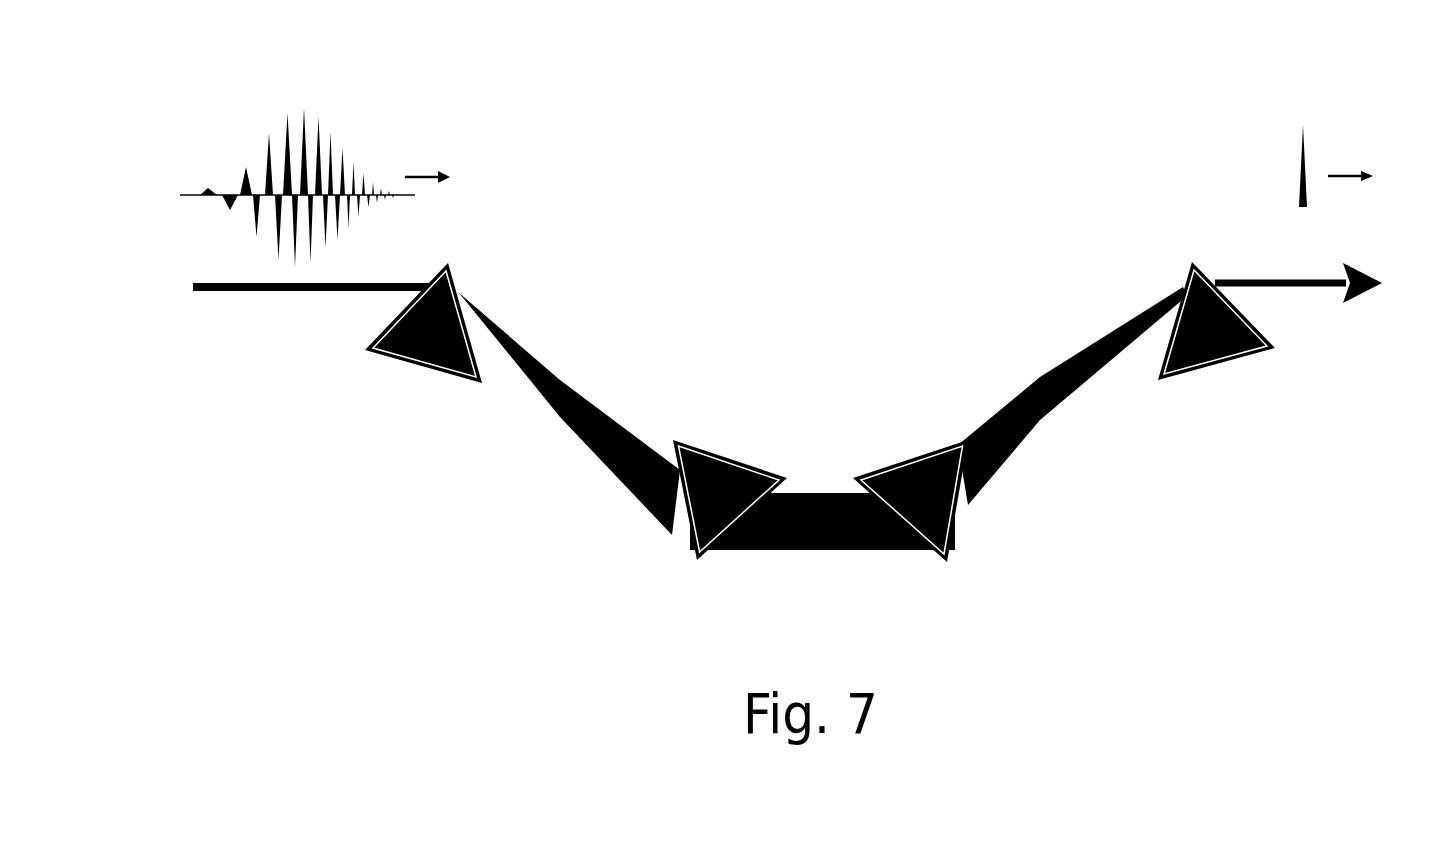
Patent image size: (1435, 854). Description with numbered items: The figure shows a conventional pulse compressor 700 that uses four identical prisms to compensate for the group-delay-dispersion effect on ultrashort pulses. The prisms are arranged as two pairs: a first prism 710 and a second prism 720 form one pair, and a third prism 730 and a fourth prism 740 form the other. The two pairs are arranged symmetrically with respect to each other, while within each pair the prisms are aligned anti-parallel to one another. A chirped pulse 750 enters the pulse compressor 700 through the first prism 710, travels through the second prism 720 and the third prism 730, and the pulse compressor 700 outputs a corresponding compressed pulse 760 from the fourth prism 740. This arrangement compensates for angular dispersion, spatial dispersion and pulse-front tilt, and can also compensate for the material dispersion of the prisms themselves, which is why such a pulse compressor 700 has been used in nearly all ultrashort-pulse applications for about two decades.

The pulse compressor 700 is at (878, 70).
The first prism 710 is at (433, 347).
The second prism 720 is at (734, 472).
The third prism 730 is at (924, 476).
The fourth prism 740 is at (1205, 342).
The chirped pulse 750 is at (315, 189).
The compressed pulse 760 is at (1324, 193).